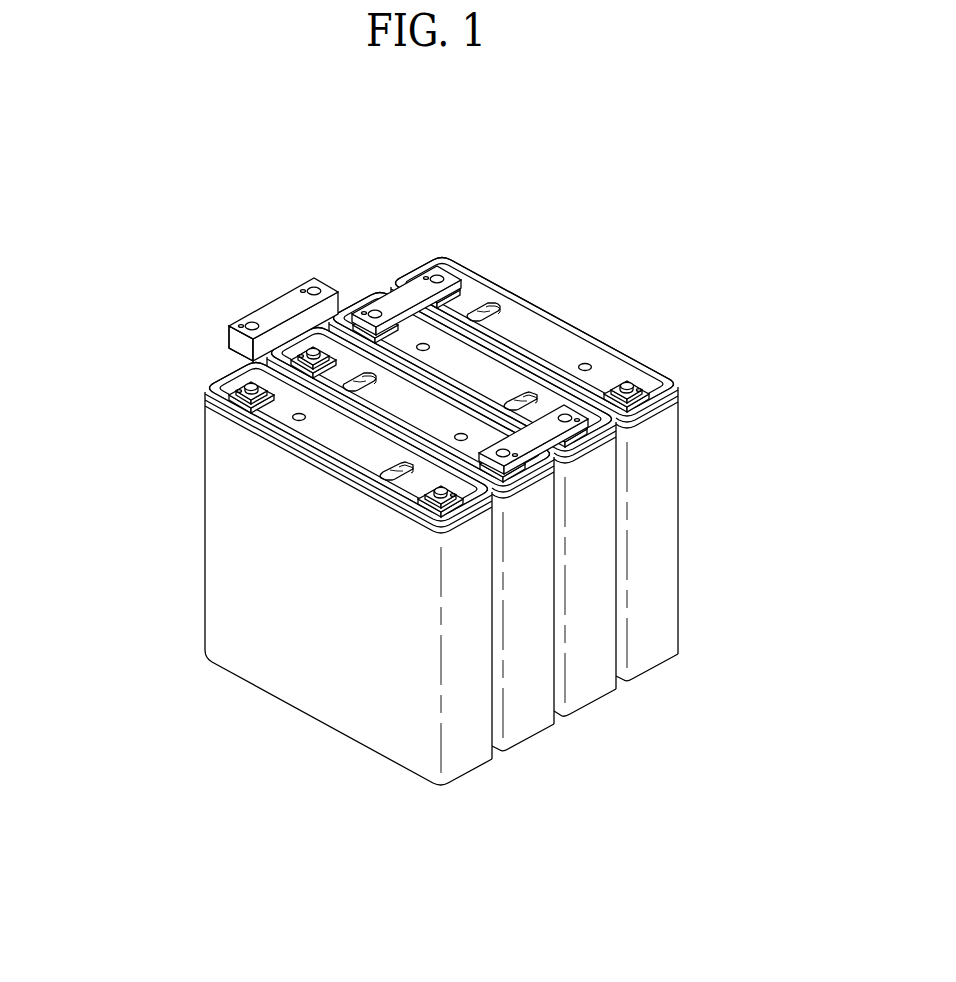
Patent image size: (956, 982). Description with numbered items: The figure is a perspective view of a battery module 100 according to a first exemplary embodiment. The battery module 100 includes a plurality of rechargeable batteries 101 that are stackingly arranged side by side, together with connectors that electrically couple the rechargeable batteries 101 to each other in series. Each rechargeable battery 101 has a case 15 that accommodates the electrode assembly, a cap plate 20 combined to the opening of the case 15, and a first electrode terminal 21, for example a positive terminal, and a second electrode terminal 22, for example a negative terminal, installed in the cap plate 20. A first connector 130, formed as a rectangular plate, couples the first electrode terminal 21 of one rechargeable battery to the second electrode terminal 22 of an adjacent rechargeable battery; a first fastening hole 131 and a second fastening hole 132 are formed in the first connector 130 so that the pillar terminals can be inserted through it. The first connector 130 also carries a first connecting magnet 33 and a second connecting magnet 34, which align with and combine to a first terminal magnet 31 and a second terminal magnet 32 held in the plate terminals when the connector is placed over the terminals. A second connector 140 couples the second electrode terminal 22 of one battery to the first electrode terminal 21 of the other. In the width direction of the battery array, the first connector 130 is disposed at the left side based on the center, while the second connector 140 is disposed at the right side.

The battery module 100 is at (517, 213).
The rechargeable battery 101 is at (395, 523).
The case 15 is at (277, 666).
The cap plate 20 is at (330, 439).
The first electrode terminal 21 is at (246, 381).
The second electrode terminal 22 is at (308, 348).
The first terminal magnet 31 is at (243, 389).
The second terminal magnet 32 is at (504, 493).
The first connecting magnet 33 is at (235, 321).
The second connecting magnet 34 is at (302, 288).
The first connector 130 is at (284, 291).
The first fastening hole 131 is at (239, 324).
The second fastening hole 132 is at (319, 288).
The second connector 140 is at (553, 451).